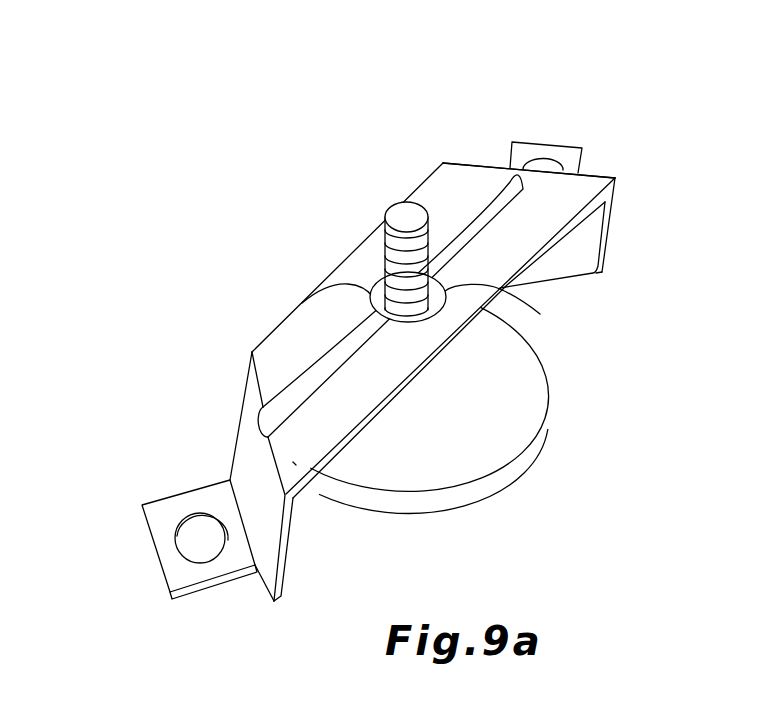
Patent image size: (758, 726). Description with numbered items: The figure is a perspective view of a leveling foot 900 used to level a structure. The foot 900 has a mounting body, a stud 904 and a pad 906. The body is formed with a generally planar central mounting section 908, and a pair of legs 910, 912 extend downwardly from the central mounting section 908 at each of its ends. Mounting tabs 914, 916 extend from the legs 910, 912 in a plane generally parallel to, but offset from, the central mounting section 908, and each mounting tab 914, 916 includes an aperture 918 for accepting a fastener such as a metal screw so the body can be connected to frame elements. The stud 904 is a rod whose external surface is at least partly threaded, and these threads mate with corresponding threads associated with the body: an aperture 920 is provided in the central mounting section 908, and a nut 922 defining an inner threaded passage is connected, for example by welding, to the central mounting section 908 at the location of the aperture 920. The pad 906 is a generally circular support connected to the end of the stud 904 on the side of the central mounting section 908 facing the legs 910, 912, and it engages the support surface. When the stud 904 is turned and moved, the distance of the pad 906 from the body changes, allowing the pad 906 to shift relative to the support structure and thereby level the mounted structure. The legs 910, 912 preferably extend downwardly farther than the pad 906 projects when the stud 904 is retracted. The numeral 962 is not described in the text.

The foot 900 is at (295, 251).
The stud 904 is at (400, 207).
The pad 906 is at (536, 382).
The central mounting section 908 is at (293, 462).
The leg 910 is at (266, 568).
The leg 912 is at (582, 243).
The mounting tab 914 is at (157, 523).
The mounting tab 916 is at (522, 155).
The aperture 918 is at (550, 163).
The aperture 920 is at (540, 314).
The nut 922 is at (302, 303).
The bracket 962 is at (230, 390).